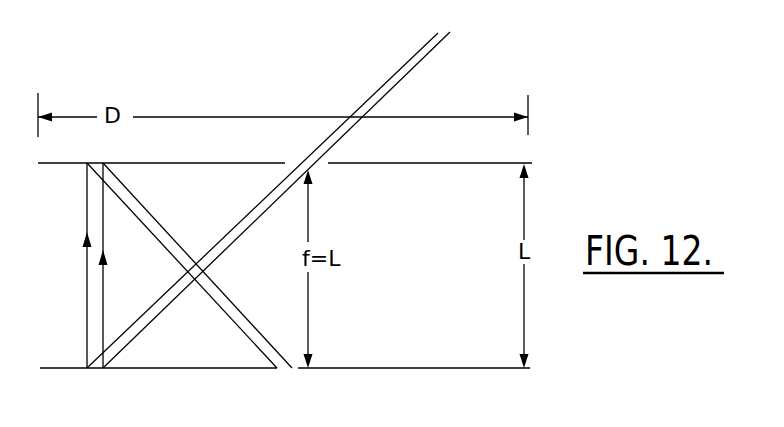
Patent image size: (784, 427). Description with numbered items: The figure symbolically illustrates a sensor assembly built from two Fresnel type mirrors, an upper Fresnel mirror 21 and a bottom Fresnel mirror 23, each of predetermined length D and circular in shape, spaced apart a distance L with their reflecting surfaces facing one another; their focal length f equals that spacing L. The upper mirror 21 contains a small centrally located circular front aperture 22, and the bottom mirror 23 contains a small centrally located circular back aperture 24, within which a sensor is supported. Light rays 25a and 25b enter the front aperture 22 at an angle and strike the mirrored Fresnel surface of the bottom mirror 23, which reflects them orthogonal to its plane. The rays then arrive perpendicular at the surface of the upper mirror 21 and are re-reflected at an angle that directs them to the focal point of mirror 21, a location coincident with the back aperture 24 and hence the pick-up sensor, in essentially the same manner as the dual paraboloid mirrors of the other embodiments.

The Fresnel mirror 21 is at (446, 163).
The front aperture 22 is at (318, 174).
The Fresnel mirror 23 is at (383, 368).
The back aperture 24 is at (279, 372).
The light ray 25a is at (417, 52).
The light ray 25b is at (437, 52).